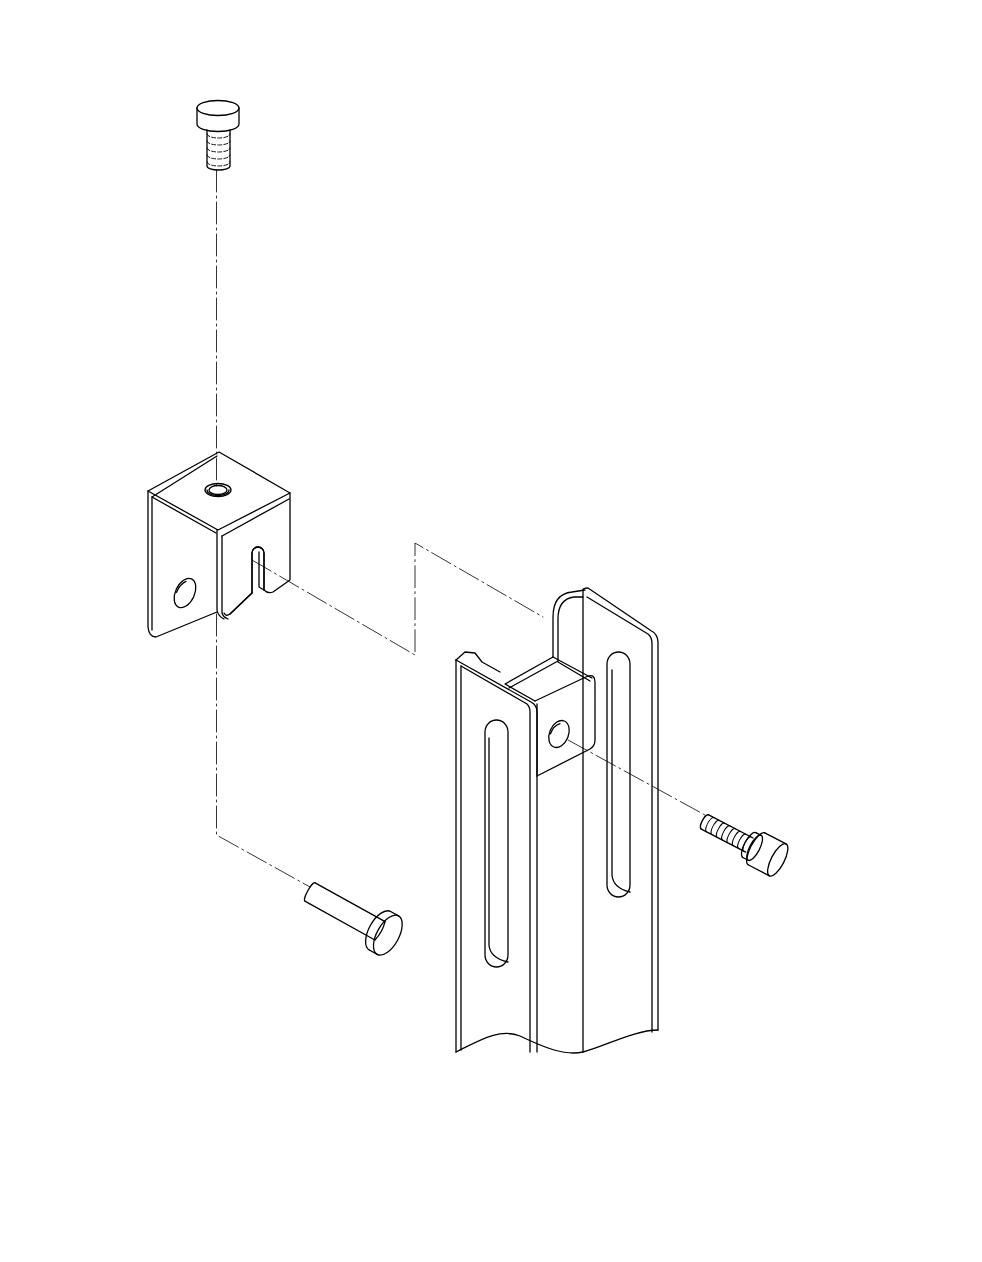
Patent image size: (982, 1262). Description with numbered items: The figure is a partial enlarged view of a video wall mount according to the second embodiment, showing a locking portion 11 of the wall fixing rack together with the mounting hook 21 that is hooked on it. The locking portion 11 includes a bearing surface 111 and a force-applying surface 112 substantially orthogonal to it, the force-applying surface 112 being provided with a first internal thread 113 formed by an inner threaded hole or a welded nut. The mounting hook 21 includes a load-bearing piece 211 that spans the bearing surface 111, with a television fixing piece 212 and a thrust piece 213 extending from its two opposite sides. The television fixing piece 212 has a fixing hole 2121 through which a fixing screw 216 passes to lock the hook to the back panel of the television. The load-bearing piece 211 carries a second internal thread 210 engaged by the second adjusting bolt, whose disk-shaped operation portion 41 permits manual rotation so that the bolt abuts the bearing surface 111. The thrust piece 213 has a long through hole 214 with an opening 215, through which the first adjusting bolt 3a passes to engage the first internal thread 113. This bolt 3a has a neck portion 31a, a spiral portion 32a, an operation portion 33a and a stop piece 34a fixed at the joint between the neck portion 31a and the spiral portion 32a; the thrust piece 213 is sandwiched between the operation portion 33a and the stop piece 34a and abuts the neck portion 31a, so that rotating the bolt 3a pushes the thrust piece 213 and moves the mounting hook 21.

The operation portion 41 is at (226, 110).
The mounting hook 21 is at (461, 662).
The second internal thread 210 is at (223, 484).
The load-bearing piece 211 is at (246, 361).
The television fixing piece 212 is at (138, 586).
The fixing hole 2121 is at (182, 600).
The thrust piece 213 is at (269, 505).
The through hole 214 is at (256, 567).
The opening 215 is at (262, 598).
The fixing screw 216 is at (342, 908).
The locking portion 11 is at (641, 766).
The bearing surface 111 is at (643, 644).
The force-applying surface 112 is at (658, 687).
The first internal thread 113 is at (663, 715).
The first adjusting bolt 3a is at (784, 882).
The neck portion 31a is at (767, 854).
The spiral portion 32a is at (726, 833).
The operation portion 33a is at (745, 826).
The stop piece 34a is at (751, 846).